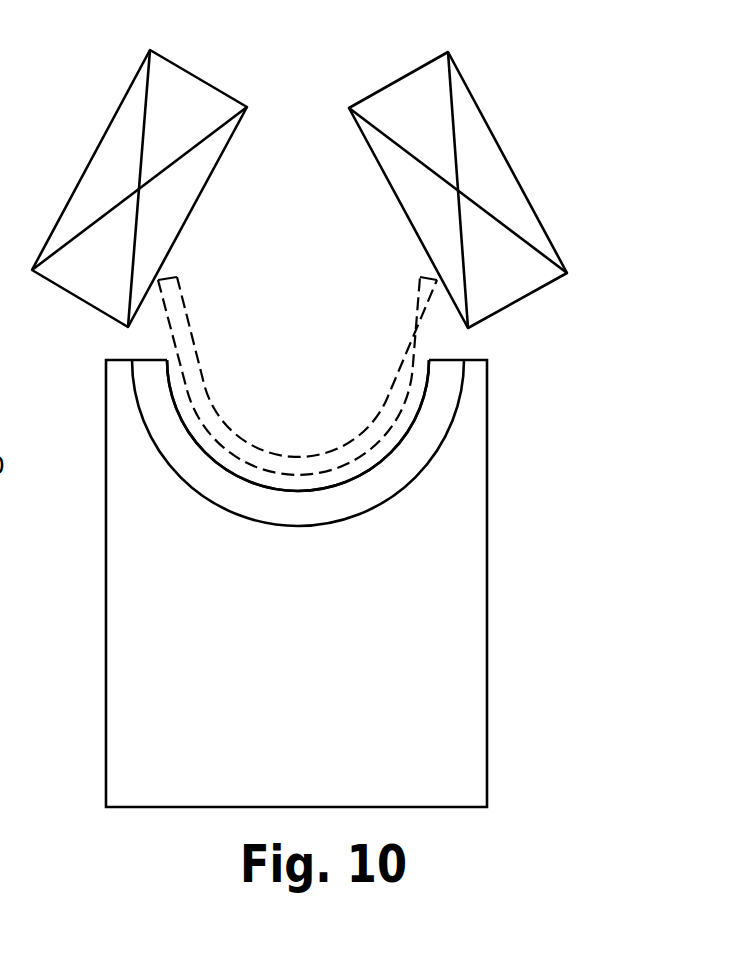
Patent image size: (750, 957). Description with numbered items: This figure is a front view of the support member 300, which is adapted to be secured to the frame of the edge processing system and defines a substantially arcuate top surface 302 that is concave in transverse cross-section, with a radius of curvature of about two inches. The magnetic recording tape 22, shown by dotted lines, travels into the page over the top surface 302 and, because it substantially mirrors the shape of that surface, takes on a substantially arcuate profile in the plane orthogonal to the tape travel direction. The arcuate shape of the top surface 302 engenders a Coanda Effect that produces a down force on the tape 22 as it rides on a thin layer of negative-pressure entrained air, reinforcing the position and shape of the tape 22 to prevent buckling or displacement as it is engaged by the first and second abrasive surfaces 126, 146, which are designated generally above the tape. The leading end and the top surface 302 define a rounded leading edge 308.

The first abrasive surface 126 is at (230, 160).
The second abrasive surface 146 is at (392, 209).
The magnetic recording tape 22 is at (213, 315).
The support member 300 is at (640, 202).
The top surface 302 is at (211, 450).
The leading edge 308 is at (430, 438).